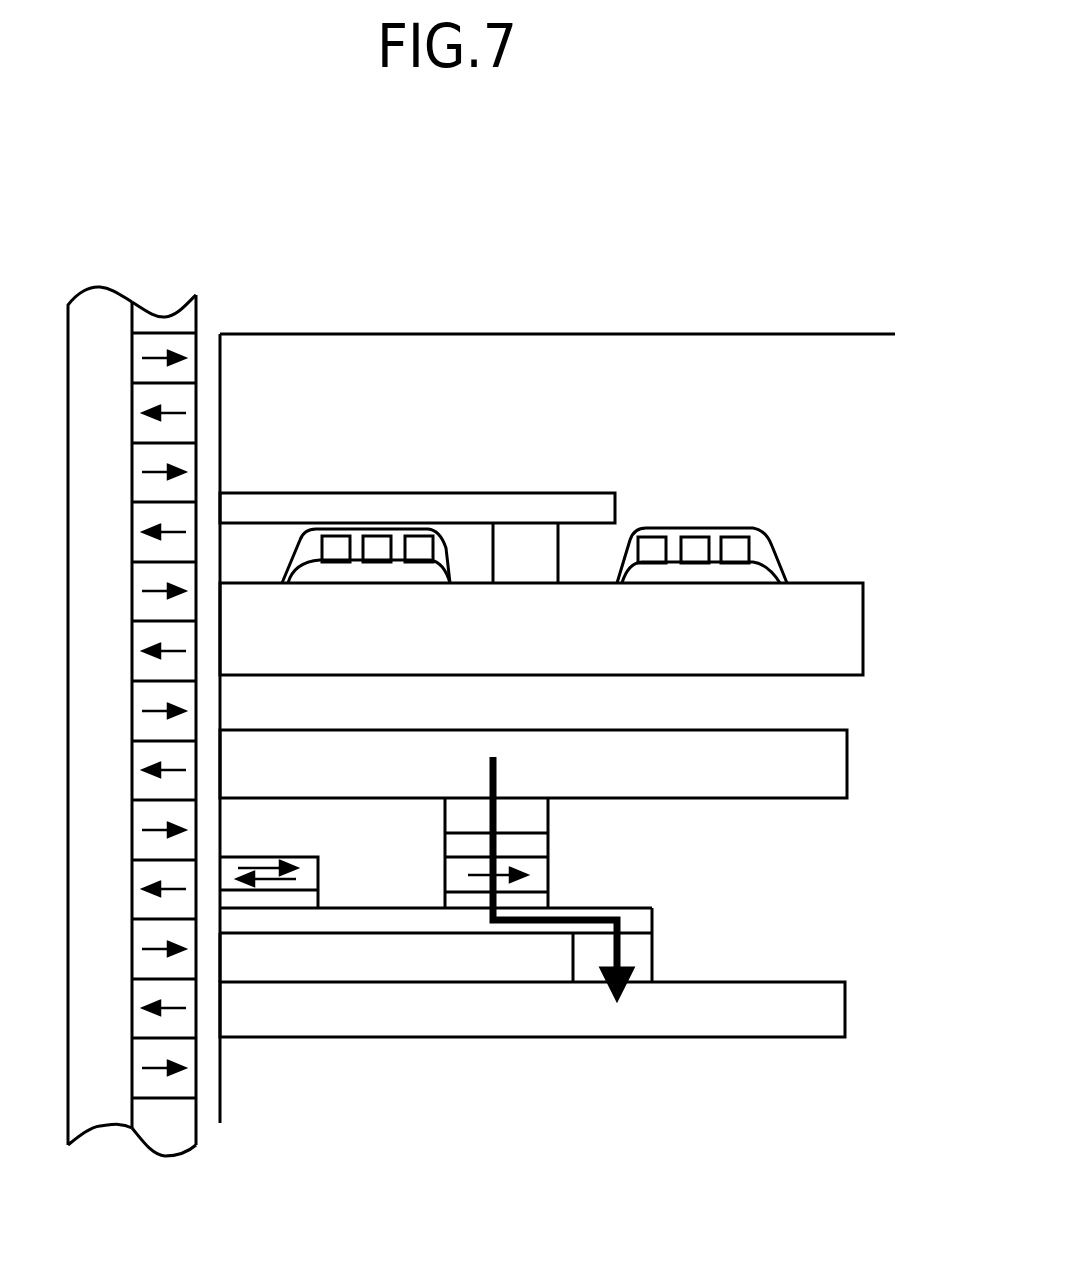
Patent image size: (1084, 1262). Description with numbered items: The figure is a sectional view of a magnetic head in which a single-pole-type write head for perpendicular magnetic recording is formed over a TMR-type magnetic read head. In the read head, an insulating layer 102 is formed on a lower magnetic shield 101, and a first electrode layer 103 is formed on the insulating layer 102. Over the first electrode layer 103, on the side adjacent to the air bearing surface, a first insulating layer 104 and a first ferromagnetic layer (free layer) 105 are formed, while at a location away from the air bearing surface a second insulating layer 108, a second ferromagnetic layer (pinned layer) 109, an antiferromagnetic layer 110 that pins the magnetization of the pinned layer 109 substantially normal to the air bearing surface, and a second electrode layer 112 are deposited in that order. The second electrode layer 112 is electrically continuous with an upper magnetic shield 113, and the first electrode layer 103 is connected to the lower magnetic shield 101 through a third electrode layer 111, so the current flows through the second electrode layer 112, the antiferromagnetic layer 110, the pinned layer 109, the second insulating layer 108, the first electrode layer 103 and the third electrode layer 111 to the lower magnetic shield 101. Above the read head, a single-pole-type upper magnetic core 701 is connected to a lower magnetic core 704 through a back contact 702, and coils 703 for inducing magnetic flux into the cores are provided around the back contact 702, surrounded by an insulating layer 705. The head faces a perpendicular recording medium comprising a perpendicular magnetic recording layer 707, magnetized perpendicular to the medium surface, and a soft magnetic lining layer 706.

The lower magnetic shield 101 is at (575, 1005).
The insulating layer 102 is at (463, 963).
The first electrode layer 103 is at (247, 923).
The first insulating layer 104 is at (268, 902).
The first ferromagnetic layer (free layer) 105 is at (303, 873).
The second insulating layer 108 is at (522, 902).
The second ferromagnetic layer (pinned layer) 109 is at (537, 875).
The antiferromagnetic layer 110 is at (523, 847).
The third electrode layer 111 is at (635, 955).
The second electrode layer 112 is at (462, 815).
The upper magnetic shield 113 is at (822, 758).
The single-pole-type upper magnetic core 701 is at (453, 503).
The back contact 702 is at (523, 543).
The coils 703 is at (373, 550).
The lower magnetic core 704 is at (832, 595).
The insulating layer 705 is at (262, 543).
The soft magnetic lining layer 706 is at (102, 327).
The perpendicular magnetic recording layer 707 is at (153, 320).